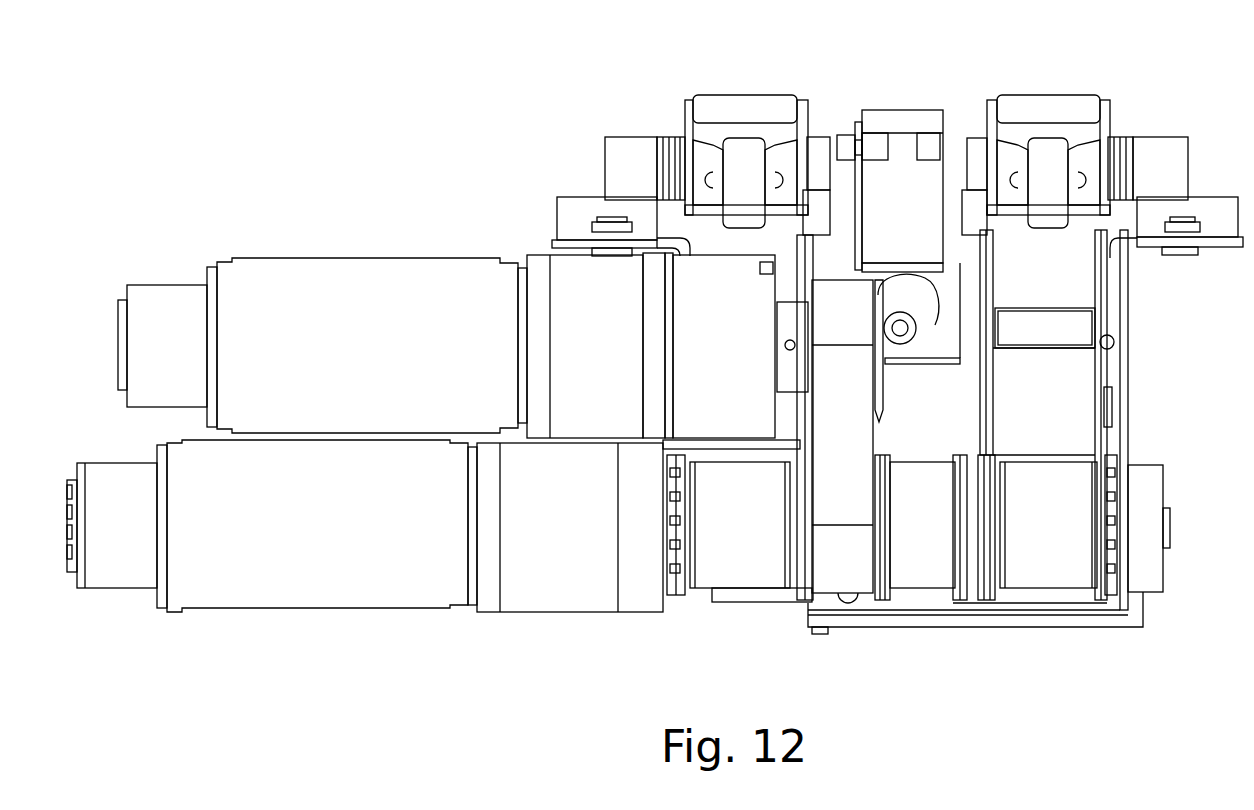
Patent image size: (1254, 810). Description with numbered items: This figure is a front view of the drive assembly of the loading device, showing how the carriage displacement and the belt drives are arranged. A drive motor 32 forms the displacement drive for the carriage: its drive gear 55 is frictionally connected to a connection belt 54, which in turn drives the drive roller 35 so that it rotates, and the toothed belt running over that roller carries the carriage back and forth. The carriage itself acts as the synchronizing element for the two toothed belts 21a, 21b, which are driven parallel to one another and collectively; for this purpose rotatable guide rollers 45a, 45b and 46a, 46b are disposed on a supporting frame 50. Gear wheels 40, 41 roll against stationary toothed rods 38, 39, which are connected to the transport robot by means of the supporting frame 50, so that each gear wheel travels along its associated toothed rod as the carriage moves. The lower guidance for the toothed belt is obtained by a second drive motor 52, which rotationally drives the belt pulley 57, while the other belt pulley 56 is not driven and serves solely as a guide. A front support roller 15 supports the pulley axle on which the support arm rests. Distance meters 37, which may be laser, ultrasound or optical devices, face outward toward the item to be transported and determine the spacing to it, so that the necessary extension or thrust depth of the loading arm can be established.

The front support roller 15 is at (748, 157).
The toothed belt 21a is at (745, 107).
The toothed belt 21b is at (1045, 107).
The drive motor 32 is at (365, 290).
The drive roller 35 is at (817, 523).
The distance meter 37 is at (905, 115).
The toothed rod 38 is at (1165, 165).
The toothed rod 39 is at (632, 157).
The gear wheel 40 is at (1122, 145).
The gear wheel 41 is at (668, 157).
The guide roller 45a is at (683, 237).
The guide roller 45b is at (740, 450).
The guide roller 46a is at (1080, 292).
The guide roller 46b is at (1080, 370).
The supporting frame 50 is at (655, 345).
The drive motor 52 is at (315, 590).
The connection belt 54 is at (850, 423).
The drive gear 55 is at (885, 375).
The belt pulley 56 is at (742, 570).
The belt pulley 57 is at (1035, 568).